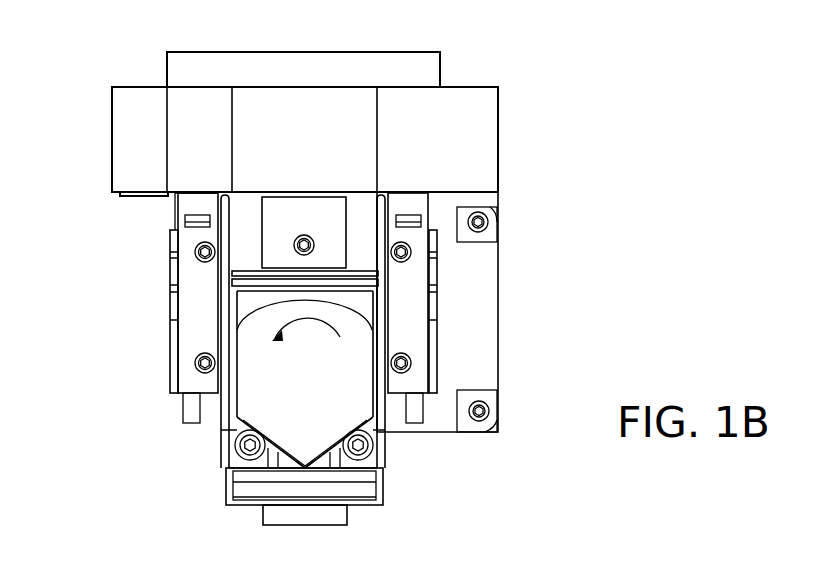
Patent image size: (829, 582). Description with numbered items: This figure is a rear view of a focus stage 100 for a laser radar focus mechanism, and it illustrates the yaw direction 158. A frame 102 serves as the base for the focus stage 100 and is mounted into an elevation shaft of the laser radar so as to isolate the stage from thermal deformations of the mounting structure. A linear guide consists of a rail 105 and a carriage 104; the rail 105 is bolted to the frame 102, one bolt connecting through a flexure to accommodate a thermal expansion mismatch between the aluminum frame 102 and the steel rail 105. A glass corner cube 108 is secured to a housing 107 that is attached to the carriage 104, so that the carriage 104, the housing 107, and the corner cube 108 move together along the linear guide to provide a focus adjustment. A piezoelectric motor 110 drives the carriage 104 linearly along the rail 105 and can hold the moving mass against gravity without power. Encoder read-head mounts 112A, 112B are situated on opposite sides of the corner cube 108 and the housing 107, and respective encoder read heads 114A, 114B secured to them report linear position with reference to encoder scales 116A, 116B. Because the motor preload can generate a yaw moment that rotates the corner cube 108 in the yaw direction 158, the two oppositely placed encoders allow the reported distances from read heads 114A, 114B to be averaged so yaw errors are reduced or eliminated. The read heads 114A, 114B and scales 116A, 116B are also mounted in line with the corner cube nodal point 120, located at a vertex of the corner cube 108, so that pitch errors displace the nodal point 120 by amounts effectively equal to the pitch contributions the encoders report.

The focus stage 100 is at (535, 79).
The frame 102 is at (499, 139).
The carriage 104 is at (380, 490).
The rail 105 is at (348, 518).
The housing 107 is at (225, 423).
The corner cube 108 is at (290, 440).
The piezoelectric motor 110 is at (484, 289).
The encoder read-head mount 112A is at (418, 281).
The encoder read-head mount 112B is at (188, 323).
The encoder read head 114A is at (440, 327).
The encoder read head 114B is at (173, 343).
The encoder scale 116A is at (385, 453).
The encoder scale 116B is at (230, 458).
The corner cube nodal point 120 is at (302, 453).
The yaw direction 158 is at (270, 310).